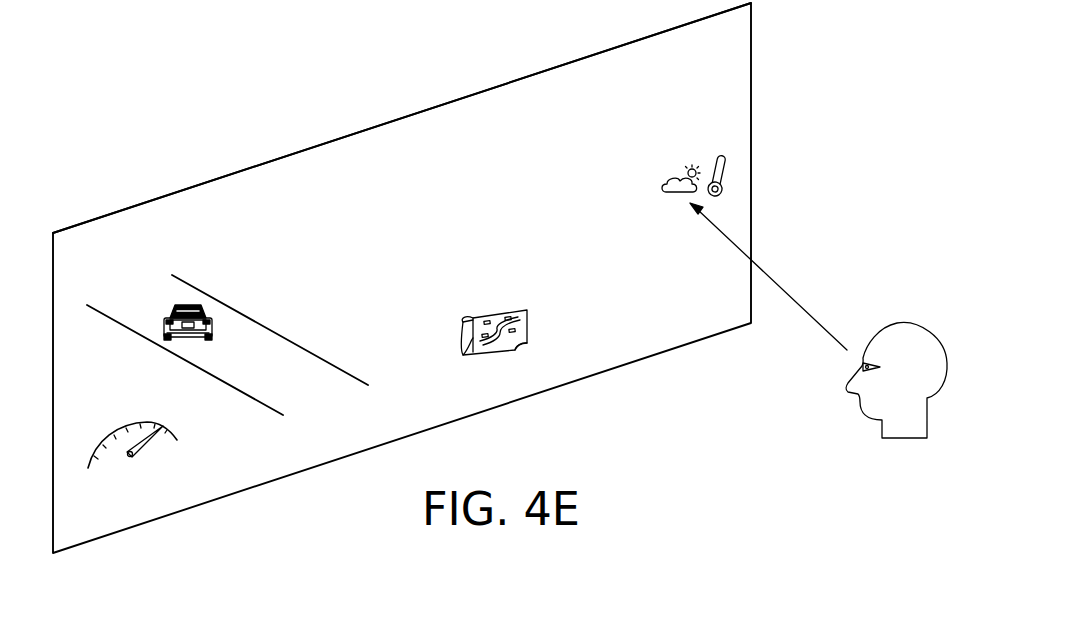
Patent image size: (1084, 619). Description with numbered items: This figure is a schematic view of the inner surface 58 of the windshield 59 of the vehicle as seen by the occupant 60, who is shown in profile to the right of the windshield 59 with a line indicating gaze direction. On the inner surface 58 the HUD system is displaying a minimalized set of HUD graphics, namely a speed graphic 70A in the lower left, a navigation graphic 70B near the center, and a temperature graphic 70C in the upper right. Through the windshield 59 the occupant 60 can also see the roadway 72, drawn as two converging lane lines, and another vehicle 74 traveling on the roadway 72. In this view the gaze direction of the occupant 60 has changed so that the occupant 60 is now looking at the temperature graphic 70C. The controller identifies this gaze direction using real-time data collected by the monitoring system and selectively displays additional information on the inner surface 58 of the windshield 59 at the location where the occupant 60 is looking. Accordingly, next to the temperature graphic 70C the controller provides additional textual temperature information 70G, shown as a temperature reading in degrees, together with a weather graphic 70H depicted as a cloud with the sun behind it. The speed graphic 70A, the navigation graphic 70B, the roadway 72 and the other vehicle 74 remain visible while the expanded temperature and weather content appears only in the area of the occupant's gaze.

The inner surface 58 is at (415, 202).
The windshield 59 is at (224, 170).
The occupant 60 is at (923, 376).
The speed graphic 70A is at (133, 458).
The navigation graphic 70B is at (495, 318).
The temperature graphic 70C is at (715, 175).
The additional textual temperature information 70G is at (668, 206).
The weather graphic 70H is at (664, 184).
The roadway 72 is at (262, 322).
The another vehicle 74 is at (188, 304).